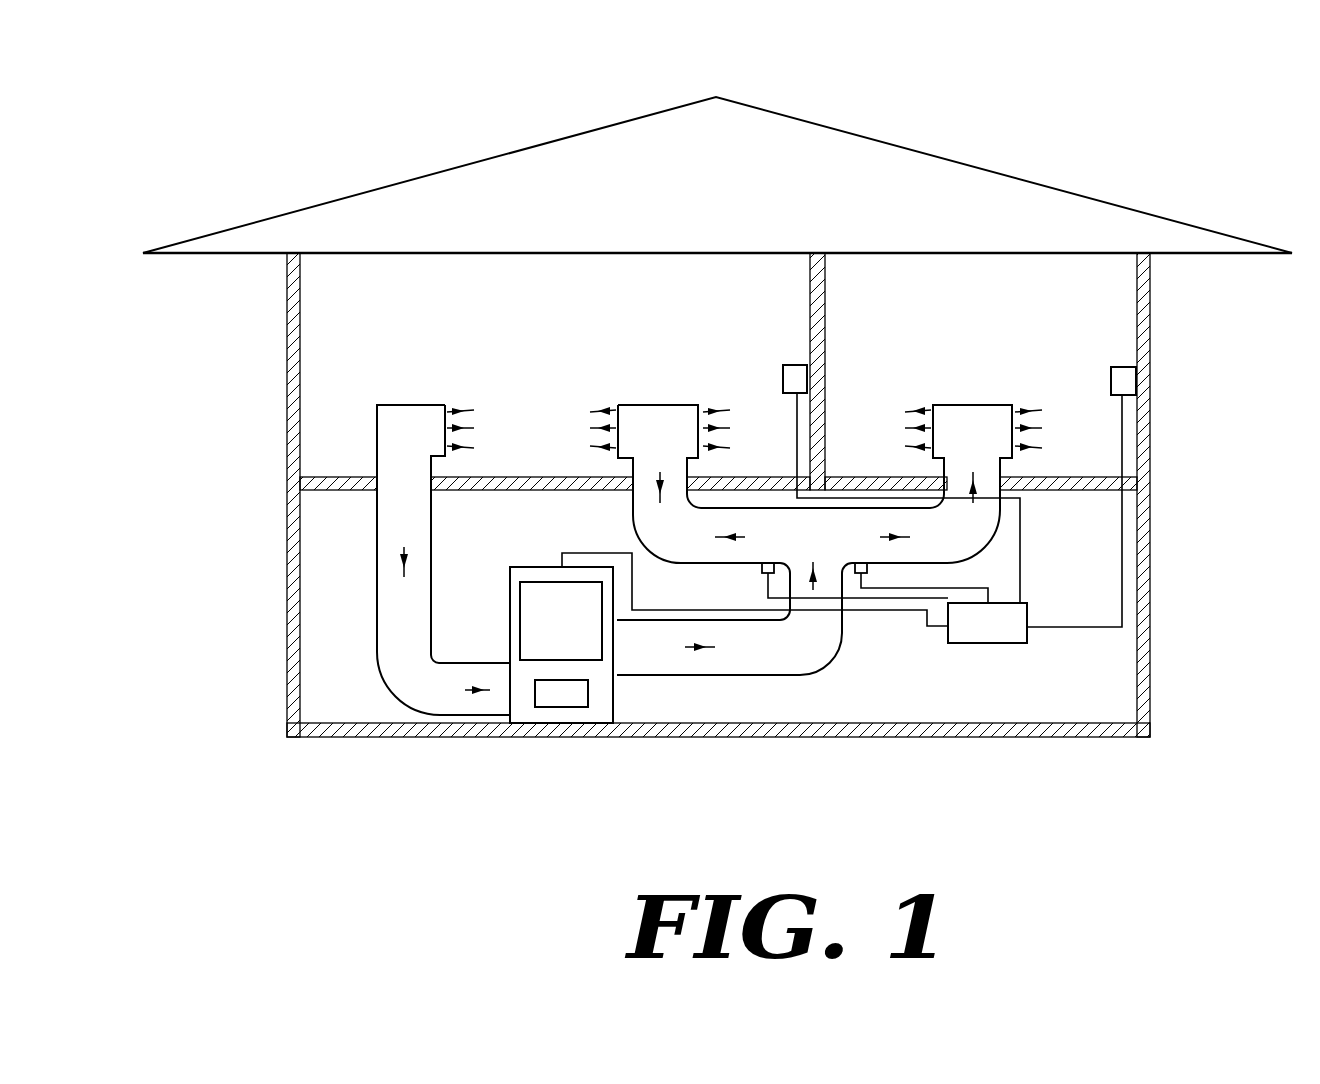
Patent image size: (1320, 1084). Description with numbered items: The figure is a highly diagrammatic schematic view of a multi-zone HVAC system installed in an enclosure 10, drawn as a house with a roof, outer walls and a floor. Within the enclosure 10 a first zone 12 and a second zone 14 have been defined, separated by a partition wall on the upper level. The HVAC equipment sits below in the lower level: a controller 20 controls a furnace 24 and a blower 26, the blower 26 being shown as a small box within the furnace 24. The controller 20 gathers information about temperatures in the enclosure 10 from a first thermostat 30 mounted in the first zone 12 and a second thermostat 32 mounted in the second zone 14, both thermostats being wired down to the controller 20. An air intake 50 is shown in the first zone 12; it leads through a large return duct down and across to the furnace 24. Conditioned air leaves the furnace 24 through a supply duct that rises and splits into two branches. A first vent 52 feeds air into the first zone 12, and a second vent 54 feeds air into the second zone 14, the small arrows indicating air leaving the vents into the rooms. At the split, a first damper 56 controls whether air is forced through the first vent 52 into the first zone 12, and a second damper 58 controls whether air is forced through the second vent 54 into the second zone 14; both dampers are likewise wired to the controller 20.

The enclosure 10 is at (404, 146).
The first zone 12 is at (390, 340).
The second zone 14 is at (1080, 330).
The controller 20 is at (1017, 635).
The furnace 24 is at (533, 647).
The blower 26 is at (572, 692).
The first thermostat 30 is at (797, 382).
The second thermostat 32 is at (1127, 383).
The air intake 50 is at (393, 430).
The first vent 52 is at (657, 425).
The second vent 54 is at (972, 420).
The first damper 56 is at (771, 575).
The second damper 58 is at (867, 576).